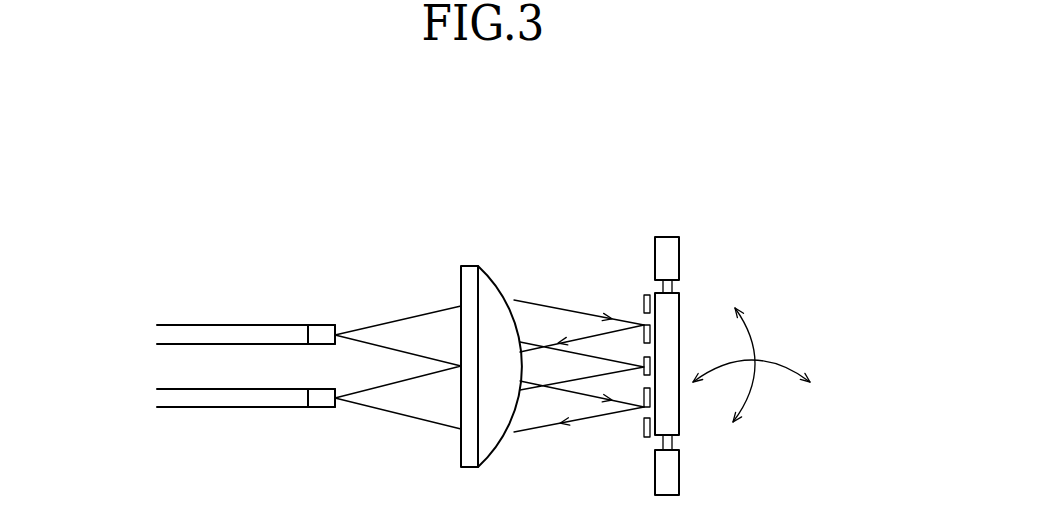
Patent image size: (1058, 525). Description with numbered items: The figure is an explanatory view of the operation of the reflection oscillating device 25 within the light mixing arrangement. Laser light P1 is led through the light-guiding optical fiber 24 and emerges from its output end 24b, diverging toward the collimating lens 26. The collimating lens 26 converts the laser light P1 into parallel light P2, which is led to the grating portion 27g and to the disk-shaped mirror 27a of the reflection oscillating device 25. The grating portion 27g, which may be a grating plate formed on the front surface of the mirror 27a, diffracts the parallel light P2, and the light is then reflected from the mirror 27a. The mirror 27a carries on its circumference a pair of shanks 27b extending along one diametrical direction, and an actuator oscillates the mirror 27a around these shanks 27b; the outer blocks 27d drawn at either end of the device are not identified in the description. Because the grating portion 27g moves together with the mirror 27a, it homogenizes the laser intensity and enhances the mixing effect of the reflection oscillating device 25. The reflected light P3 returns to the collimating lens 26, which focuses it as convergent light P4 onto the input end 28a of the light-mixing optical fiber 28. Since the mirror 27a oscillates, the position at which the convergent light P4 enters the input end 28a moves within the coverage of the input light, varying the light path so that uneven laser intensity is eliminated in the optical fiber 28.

The light-guiding optical fiber 24 is at (195, 328).
The output end 24b is at (322, 328).
The light-mixing optical fiber 28 is at (193, 403).
The input end 28a is at (322, 403).
The collimating lens 26 is at (466, 265).
The reflection oscillating device 25 is at (670, 315).
The mirror 27a is at (640, 414).
The grating portion 27g is at (645, 293).
The shanks 27b is at (668, 287).
The support / actuator portion 27d is at (673, 250).
The laser light P1 is at (395, 316).
The parallel light P2 is at (556, 304).
The reflected light P3 is at (542, 430).
The convergent light P4 is at (397, 418).